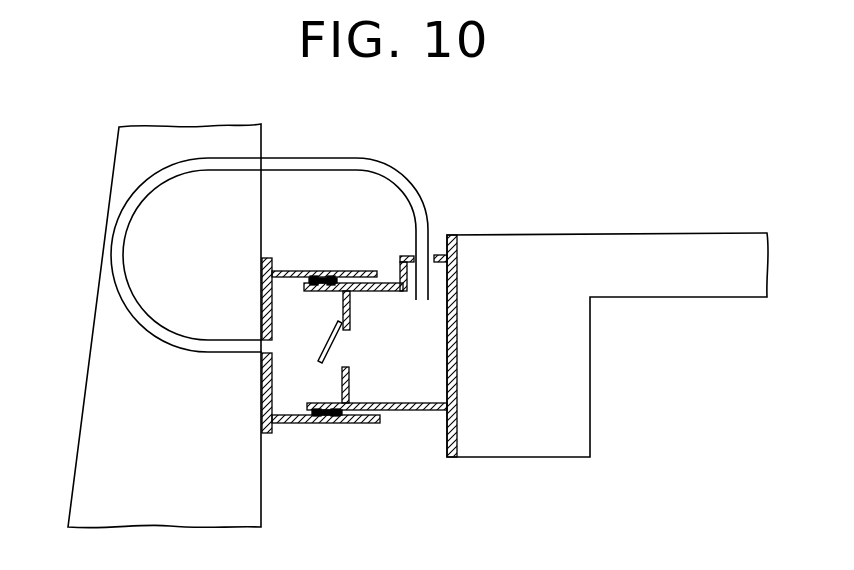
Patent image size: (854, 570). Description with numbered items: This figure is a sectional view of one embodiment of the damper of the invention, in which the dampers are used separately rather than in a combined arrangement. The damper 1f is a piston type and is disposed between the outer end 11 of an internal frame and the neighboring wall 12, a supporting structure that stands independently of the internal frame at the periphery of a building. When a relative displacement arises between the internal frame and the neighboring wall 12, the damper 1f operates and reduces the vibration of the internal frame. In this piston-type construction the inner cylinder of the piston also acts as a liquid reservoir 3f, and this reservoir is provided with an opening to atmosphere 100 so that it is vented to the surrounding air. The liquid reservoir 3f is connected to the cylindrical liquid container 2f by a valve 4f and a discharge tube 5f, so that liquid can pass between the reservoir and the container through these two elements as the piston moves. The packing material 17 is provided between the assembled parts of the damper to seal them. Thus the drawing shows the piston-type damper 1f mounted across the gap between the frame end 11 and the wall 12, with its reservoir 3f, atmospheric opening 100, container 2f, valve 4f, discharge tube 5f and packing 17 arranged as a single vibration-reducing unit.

The opening to atmosphere 100 is at (436, 250).
The outer end of internal frame 11 is at (531, 352).
The neighboring wall 12 is at (190, 443).
The damper 1f is at (376, 428).
The cylindrical liquid container 2f is at (295, 271).
The liquid reservoir 3f is at (418, 410).
The valve 4f is at (340, 366).
The discharge tube 5f is at (178, 178).
The packing material 17 is at (323, 417).